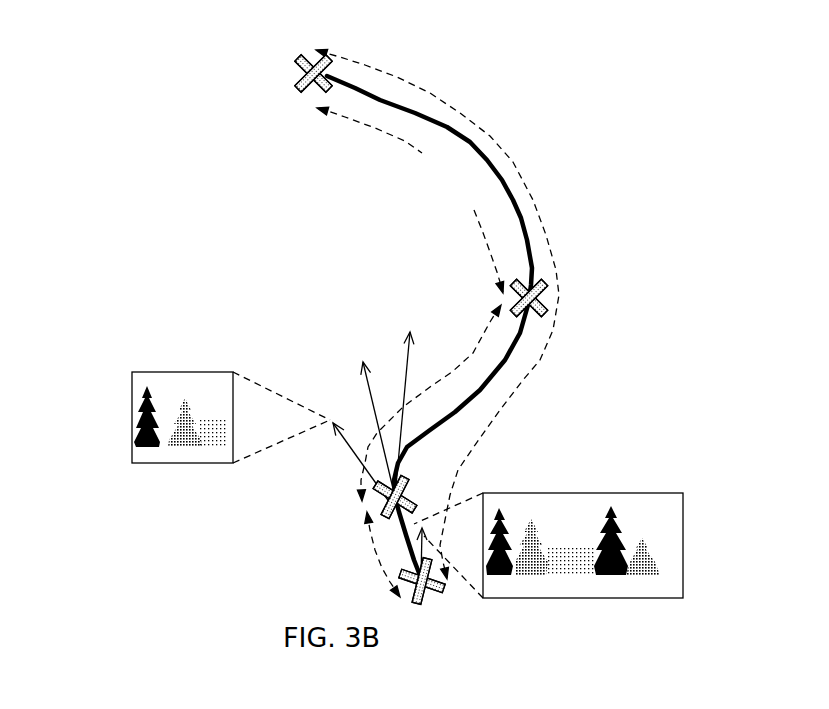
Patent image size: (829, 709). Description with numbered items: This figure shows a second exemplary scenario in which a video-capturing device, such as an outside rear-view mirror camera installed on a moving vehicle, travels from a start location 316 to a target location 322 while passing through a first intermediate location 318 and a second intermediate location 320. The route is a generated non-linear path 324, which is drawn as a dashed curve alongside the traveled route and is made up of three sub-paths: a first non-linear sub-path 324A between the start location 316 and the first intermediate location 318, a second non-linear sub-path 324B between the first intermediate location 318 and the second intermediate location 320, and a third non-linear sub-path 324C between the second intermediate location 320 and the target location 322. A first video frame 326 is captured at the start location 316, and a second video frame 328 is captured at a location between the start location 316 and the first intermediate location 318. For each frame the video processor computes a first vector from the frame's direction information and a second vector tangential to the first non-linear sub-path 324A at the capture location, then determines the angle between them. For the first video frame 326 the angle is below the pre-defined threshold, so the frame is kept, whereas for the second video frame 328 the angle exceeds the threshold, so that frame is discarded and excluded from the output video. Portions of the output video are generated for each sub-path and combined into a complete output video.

The start location 316 is at (435, 592).
The first intermediate location 318 is at (410, 497).
The second intermediate location 320 is at (540, 283).
The target location 322 is at (330, 72).
The generated non-linear path 324 is at (548, 337).
The first non-linear sub-path 324A is at (365, 555).
The second non-linear sub-path 324B is at (430, 402).
The third non-linear sub-path 324C is at (411, 199).
The first video frame 326 is at (613, 492).
The second video frame 328 is at (167, 370).